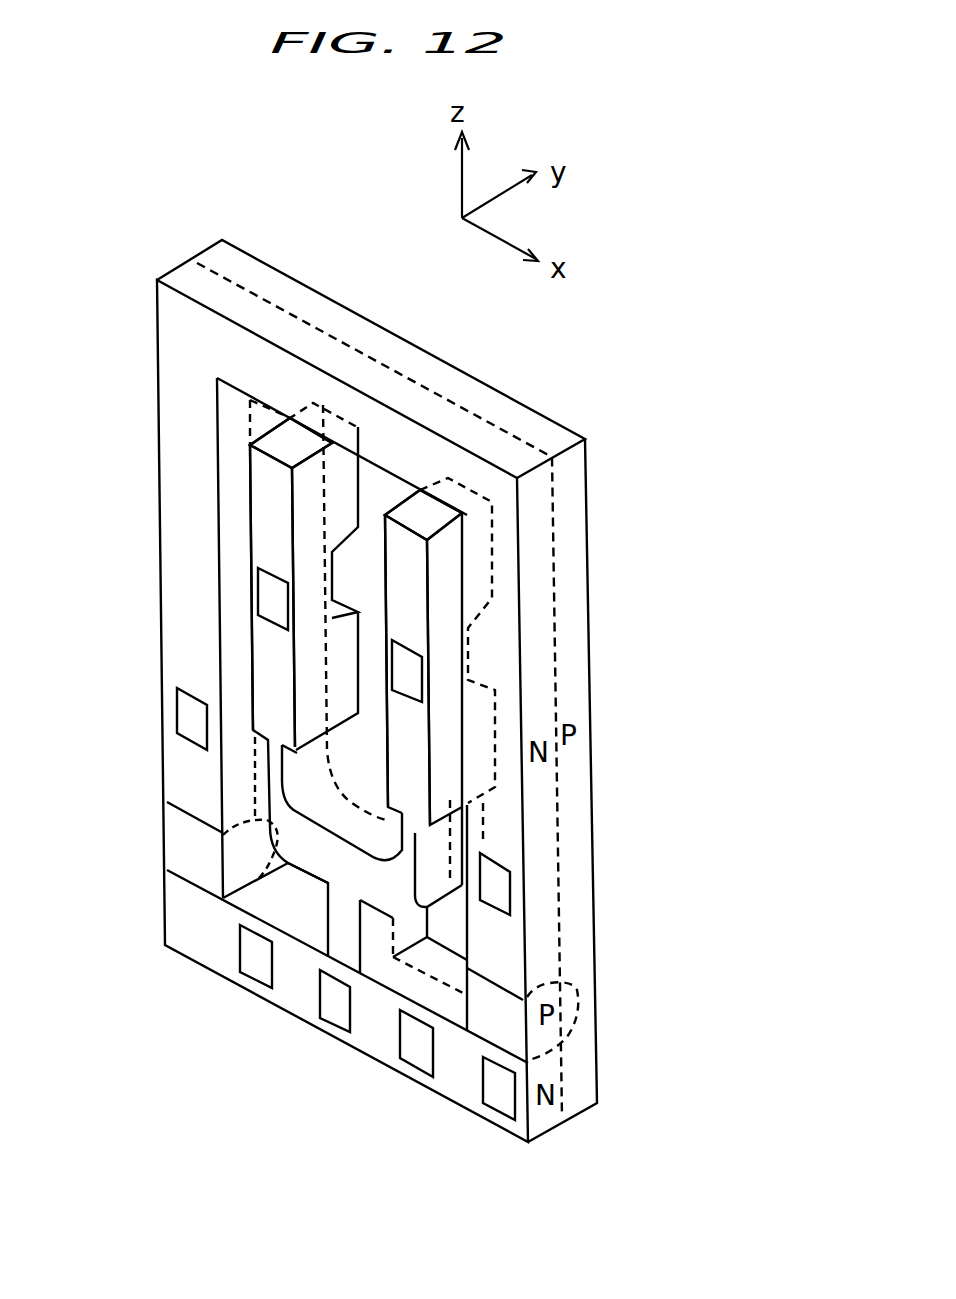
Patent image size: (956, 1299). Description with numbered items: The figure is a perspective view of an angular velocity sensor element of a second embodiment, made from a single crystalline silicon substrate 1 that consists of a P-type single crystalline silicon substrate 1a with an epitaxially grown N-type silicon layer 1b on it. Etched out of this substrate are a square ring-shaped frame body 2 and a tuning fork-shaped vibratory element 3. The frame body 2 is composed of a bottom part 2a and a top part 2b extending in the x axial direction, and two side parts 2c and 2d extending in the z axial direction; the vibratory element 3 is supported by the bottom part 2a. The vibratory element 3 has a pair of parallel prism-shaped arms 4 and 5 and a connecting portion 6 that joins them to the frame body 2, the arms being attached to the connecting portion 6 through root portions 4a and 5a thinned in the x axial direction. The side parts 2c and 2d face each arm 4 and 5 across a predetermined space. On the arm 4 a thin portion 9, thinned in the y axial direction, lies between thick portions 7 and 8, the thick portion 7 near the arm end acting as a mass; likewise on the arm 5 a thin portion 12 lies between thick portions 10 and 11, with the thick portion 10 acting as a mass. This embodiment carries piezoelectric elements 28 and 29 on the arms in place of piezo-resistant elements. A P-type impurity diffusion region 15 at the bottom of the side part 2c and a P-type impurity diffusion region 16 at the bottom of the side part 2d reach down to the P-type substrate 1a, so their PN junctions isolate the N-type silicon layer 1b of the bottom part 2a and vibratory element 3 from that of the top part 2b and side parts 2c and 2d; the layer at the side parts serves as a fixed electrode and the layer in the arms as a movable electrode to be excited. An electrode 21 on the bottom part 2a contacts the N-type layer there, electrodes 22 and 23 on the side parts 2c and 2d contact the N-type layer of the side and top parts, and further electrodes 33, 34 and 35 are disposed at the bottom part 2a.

The single crystalline silicon substrate 1 is at (607, 928).
The P-type single crystalline silicon substrate 1a is at (580, 760).
The N-type silicon layer 1b is at (540, 845).
The frame body 2 is at (575, 615).
The bottom part 2a is at (373, 1043).
The top part 2b is at (367, 415).
The side part 2c is at (173, 382).
The side part 2d is at (505, 583).
The tuning fork-shaped vibratory element 3 is at (273, 825).
The arm 4 is at (258, 527).
The root portion 4a is at (273, 780).
The arm 5 is at (400, 562).
The root portion 5a is at (472, 850).
The connecting portion 6 is at (340, 900).
The thick portion 7 is at (258, 468).
The thick portion 8 is at (270, 688).
The thin portion 9 is at (255, 587).
The thick portion 10 is at (398, 536).
The thick portion 11 is at (407, 817).
The thin portion 12 is at (427, 672).
The P-type impurity diffusion region 15 is at (178, 825).
The P-type impurity diffusion region 16 is at (490, 1022).
The electrode 21 is at (498, 1098).
The electrode 22 is at (187, 713).
The electrode 23 is at (495, 892).
The piezoelectric element 28 is at (270, 597).
The piezoelectric element 29 is at (407, 687).
The electrode 33 is at (257, 967).
The electrode 34 is at (333, 1013).
The electrode 35 is at (418, 1050).